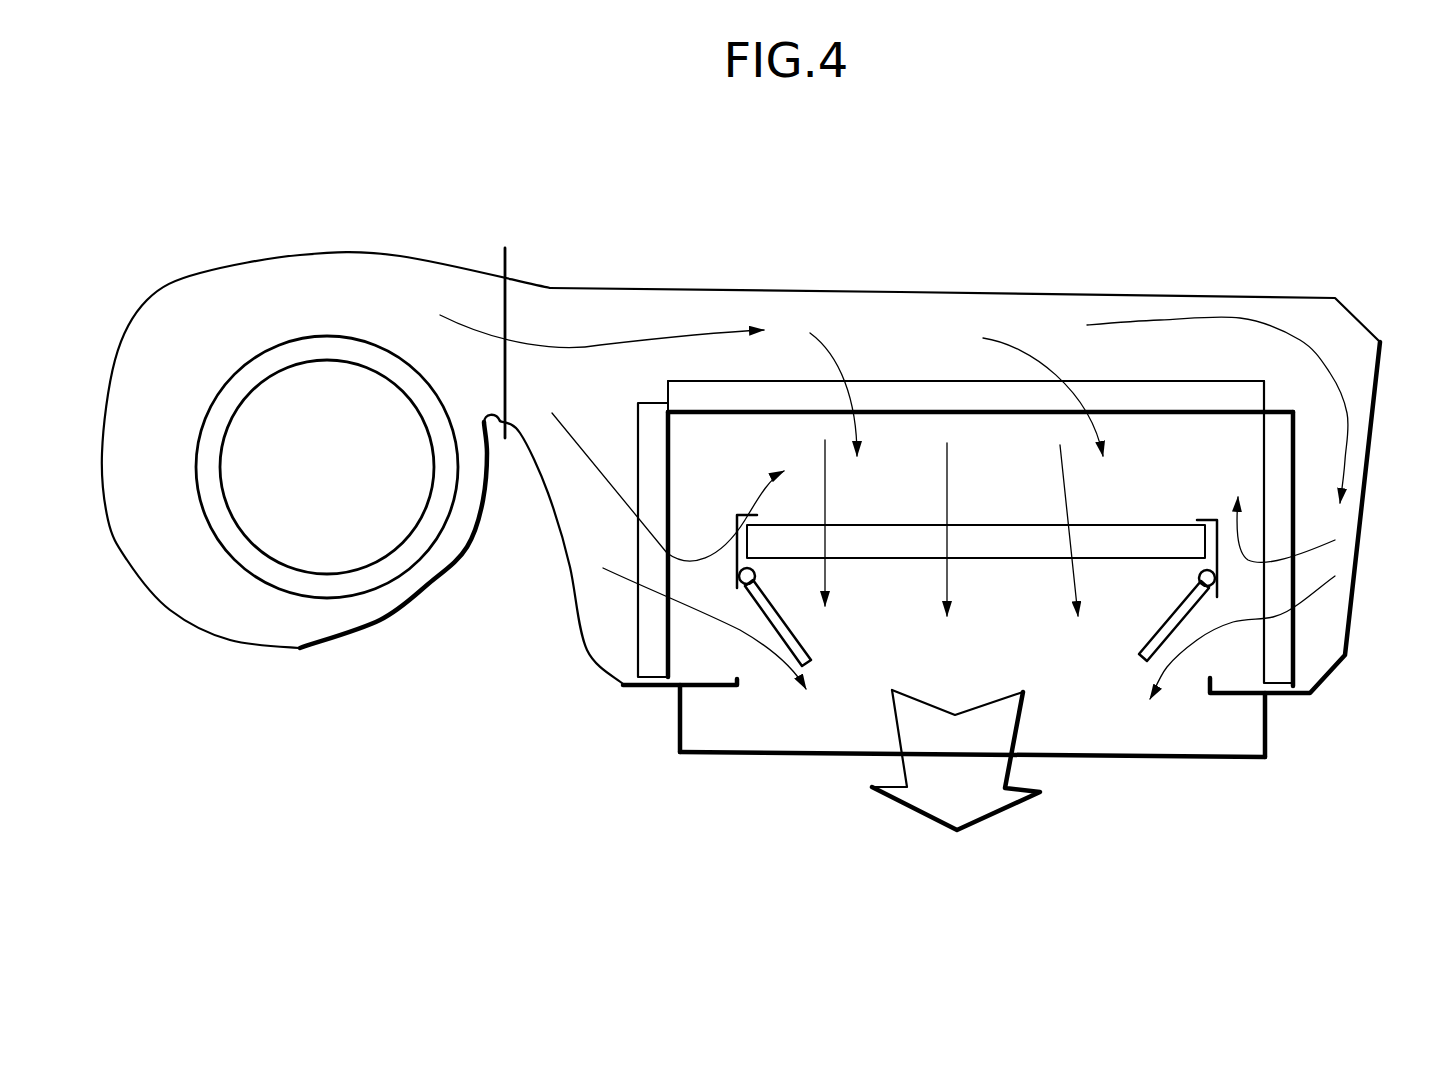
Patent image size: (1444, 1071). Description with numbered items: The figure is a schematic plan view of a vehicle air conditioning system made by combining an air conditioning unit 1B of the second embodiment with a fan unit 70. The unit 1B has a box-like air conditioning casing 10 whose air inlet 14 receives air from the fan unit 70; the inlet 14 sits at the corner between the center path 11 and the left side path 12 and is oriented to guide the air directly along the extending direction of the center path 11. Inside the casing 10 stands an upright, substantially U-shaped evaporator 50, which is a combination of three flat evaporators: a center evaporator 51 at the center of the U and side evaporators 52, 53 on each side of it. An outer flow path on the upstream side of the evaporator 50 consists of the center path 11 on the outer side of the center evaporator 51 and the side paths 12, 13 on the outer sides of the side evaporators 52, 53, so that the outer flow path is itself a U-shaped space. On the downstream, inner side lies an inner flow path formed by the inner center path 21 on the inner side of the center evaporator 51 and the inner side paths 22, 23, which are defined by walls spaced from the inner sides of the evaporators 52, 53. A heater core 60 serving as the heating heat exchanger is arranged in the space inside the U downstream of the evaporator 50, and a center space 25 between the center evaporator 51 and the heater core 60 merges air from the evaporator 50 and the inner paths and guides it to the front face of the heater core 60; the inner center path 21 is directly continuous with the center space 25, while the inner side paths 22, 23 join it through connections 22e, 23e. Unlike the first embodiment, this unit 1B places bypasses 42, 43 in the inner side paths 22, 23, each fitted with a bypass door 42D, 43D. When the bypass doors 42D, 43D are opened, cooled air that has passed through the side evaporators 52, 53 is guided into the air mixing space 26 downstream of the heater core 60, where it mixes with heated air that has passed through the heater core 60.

The air conditioning unit 1B is at (990, 406).
The air conditioning casing 10 is at (868, 287).
The center path 11 is at (1083, 303).
The side path 12 is at (613, 613).
The side path 13 is at (1340, 513).
The air inlet 14 is at (505, 310).
The inner center path 21 is at (980, 407).
The center space 25 is at (913, 427).
The inner side path 22 is at (708, 677).
The connection 22e is at (763, 422).
The inner side path 23 is at (1245, 668).
The connection 23e is at (1210, 428).
The air mixing space 26 is at (1080, 720).
The bypass 42 is at (738, 658).
The bypass door 42D is at (820, 687).
The bypass 43 is at (1212, 667).
The bypass door 43D is at (1133, 640).
The evaporator 50 is at (1191, 375).
The center evaporator 51 is at (1145, 390).
The side evaporator 52 is at (657, 648).
The side evaporator 53 is at (1294, 456).
The heater core 60 is at (900, 557).
The fan unit 70 is at (360, 252).